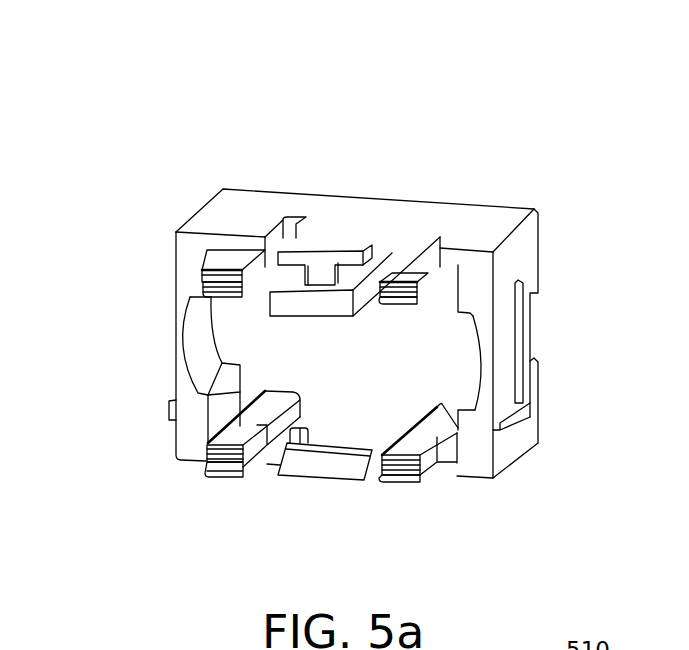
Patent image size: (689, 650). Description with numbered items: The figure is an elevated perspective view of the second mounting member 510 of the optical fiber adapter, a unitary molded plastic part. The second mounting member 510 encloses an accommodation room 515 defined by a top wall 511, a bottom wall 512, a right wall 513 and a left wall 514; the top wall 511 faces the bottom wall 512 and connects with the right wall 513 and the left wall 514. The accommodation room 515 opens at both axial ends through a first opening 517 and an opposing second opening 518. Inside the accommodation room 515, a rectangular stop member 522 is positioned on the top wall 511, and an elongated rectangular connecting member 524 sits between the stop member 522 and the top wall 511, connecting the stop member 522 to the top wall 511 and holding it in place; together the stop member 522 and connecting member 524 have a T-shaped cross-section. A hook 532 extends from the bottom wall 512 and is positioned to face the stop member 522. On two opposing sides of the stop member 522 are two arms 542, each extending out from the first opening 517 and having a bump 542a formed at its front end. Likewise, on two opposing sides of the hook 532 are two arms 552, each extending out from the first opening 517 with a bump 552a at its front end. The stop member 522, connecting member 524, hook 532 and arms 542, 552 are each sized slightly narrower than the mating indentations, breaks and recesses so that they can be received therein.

The second mounting member 510 is at (378, 116).
The top wall 511 is at (355, 217).
The bottom wall 512 is at (447, 470).
The right wall 513 is at (510, 272).
The left wall 514 is at (205, 323).
The accommodation room 515 is at (370, 418).
The first opening 517 is at (320, 413).
The second opening 518 is at (430, 338).
The stop member 522 is at (318, 309).
The connecting member 524 is at (343, 278).
The hook 532 is at (325, 466).
The arm 542 is at (251, 269).
The bump 542a is at (211, 269).
The arm 552 is at (230, 438).
The bump 552a is at (243, 468).